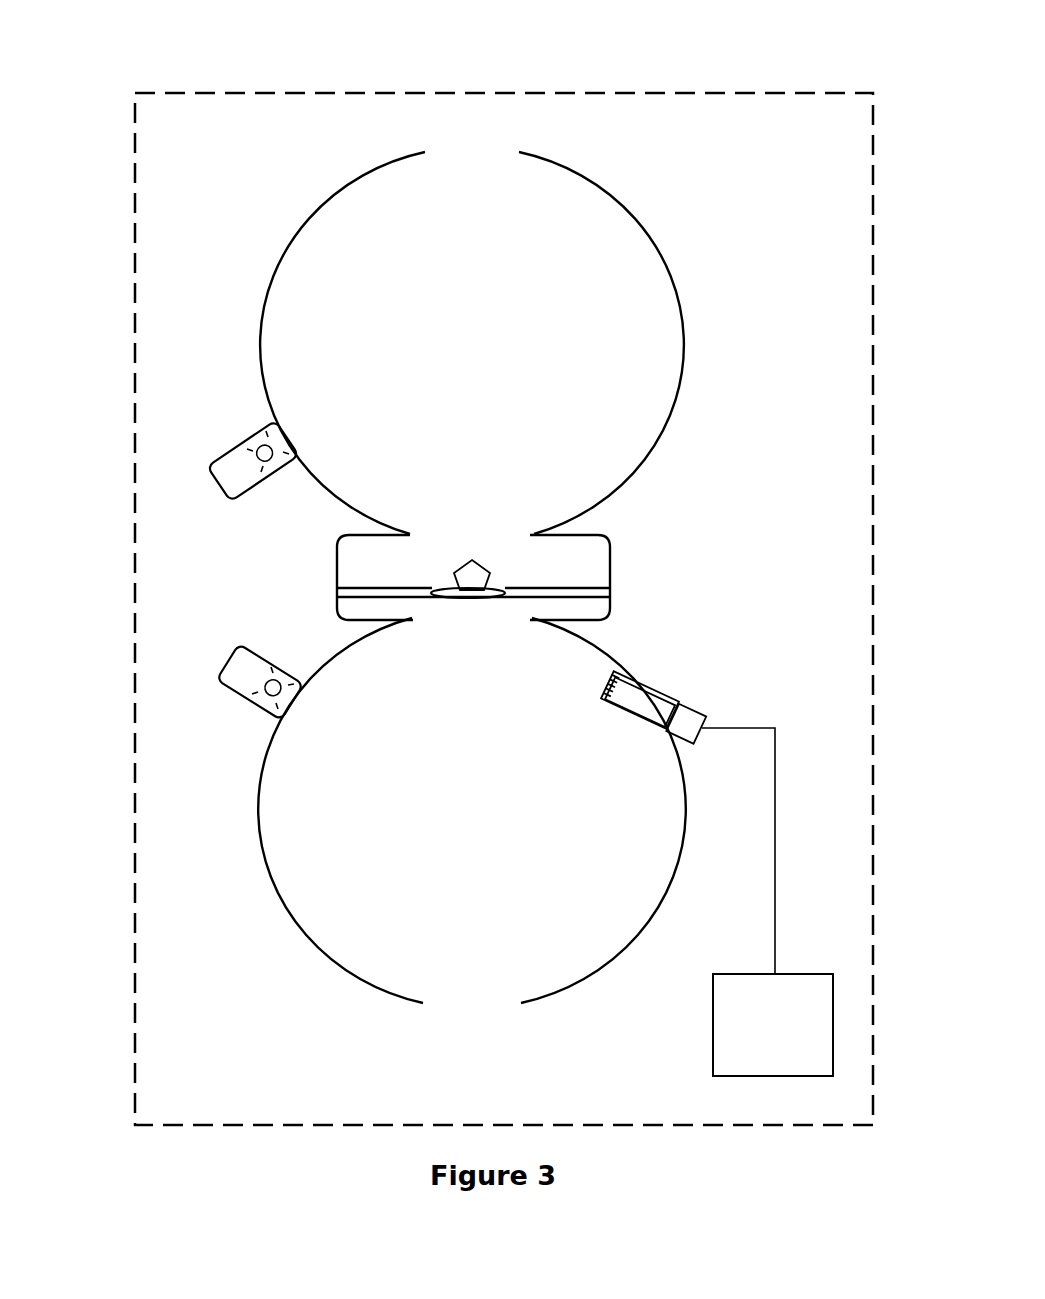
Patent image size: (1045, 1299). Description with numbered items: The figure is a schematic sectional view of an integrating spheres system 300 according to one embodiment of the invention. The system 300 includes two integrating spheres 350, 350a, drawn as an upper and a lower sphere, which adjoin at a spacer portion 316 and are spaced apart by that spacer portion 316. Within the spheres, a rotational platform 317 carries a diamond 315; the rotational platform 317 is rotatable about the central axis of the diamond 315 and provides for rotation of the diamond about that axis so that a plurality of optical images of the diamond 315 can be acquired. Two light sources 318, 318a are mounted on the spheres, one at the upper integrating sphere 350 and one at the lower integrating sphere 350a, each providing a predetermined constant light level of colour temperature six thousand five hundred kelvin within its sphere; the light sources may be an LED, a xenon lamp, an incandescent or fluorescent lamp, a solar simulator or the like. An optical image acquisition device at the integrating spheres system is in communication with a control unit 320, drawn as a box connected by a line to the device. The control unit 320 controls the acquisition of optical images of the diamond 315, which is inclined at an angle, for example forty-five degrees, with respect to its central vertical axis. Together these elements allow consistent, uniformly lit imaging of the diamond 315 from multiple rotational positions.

The integrating spheres system 300 is at (222, 70).
The integrating sphere 350 is at (679, 388).
The integrating sphere 350a is at (262, 843).
The spacer portion 316 is at (590, 535).
The rotational platform 317 is at (600, 598).
The diamond 315 is at (486, 574).
The light source 318 is at (208, 467).
The light source 318a is at (217, 680).
The control unit 320 is at (833, 1040).